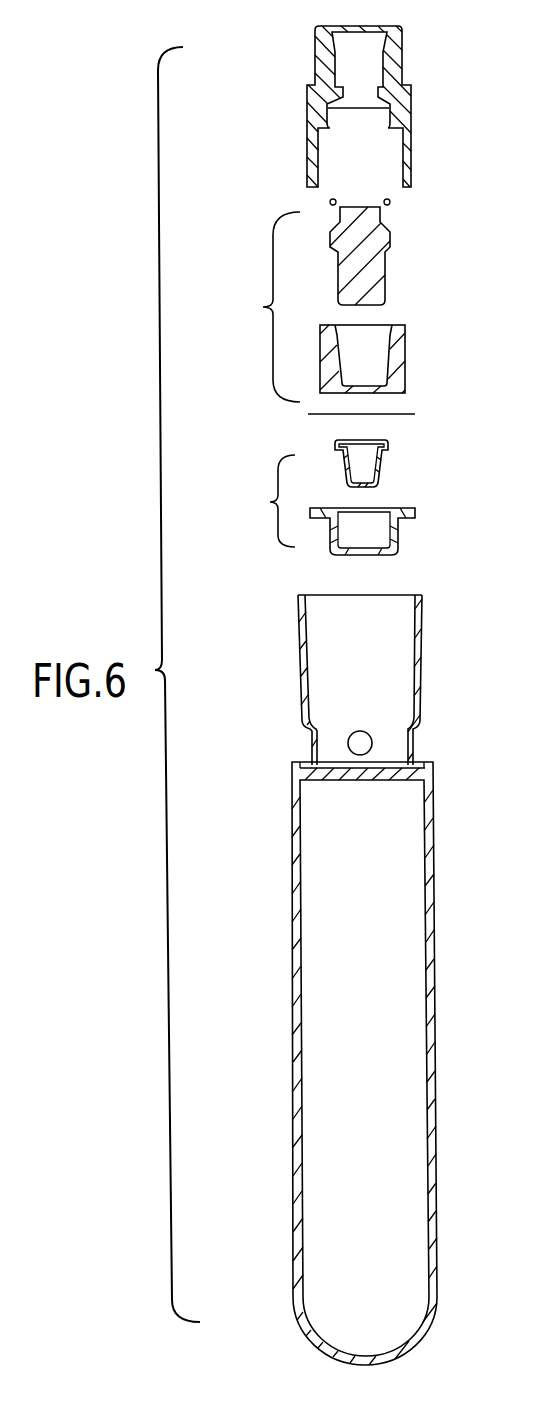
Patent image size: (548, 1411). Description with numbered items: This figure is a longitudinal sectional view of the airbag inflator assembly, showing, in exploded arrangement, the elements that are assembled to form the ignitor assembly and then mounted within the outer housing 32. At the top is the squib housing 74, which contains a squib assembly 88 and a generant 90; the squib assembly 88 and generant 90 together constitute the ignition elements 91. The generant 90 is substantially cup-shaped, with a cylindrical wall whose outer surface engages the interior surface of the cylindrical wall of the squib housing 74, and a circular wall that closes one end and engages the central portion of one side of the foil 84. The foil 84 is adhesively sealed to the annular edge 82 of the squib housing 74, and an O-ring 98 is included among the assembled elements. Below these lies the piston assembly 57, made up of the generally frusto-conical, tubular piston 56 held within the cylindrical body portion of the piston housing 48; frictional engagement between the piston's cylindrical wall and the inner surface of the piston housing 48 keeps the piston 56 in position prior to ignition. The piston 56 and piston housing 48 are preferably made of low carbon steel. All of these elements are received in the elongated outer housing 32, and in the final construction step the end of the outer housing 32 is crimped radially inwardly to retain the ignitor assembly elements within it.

The squib housing 74 is at (405, 64).
The annular edge 82 is at (408, 190).
The O-ring 98 is at (328, 200).
The squib assembly 88 is at (390, 234).
The generant 90 is at (405, 345).
The ignition elements 91 is at (267, 307).
The foil 84 is at (408, 414).
The piston 56 is at (378, 467).
The piston assembly 57 is at (265, 501).
The piston housing 48 is at (398, 535).
The outer housing 32 is at (417, 660).